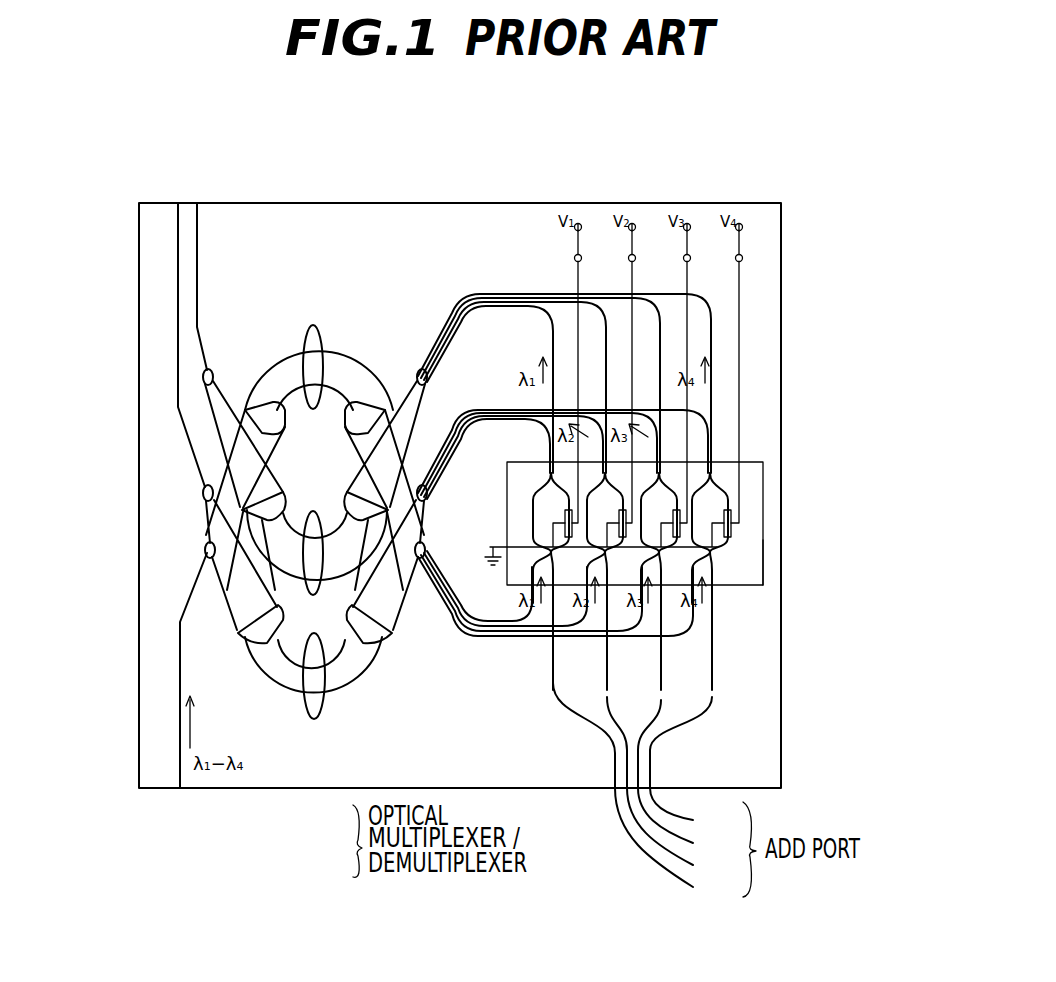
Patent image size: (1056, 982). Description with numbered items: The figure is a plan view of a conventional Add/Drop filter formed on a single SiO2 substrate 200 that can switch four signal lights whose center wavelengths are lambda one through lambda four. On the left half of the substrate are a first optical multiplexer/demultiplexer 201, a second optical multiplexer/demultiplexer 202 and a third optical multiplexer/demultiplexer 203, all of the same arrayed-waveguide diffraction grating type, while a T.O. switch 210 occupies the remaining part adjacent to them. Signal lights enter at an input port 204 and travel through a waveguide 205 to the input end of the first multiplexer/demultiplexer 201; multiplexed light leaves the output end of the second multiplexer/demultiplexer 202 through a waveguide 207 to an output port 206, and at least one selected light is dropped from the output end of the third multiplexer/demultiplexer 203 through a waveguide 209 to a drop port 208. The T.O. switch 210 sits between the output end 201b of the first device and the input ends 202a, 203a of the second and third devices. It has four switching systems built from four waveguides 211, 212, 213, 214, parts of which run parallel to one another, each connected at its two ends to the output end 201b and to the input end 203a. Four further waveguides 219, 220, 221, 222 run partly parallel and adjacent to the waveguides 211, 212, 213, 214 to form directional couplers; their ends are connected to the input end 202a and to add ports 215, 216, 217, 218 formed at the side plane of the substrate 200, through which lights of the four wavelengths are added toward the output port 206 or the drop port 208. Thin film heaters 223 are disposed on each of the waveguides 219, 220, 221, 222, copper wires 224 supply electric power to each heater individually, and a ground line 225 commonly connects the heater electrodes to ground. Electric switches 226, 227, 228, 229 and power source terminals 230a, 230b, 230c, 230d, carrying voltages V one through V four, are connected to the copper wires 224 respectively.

The SiO2 substrate 200 is at (781, 312).
The first optical multiplexer/demultiplexer 201 is at (317, 325).
The output end of the first multiplexer/demultiplexer 201b is at (423, 557).
The second optical multiplexer/demultiplexer 202 is at (313, 597).
The input end of the second multiplexer/demultiplexer 202a is at (433, 377).
The third optical multiplexer/demultiplexer 203 is at (313, 720).
The input end of the third multiplexer/demultiplexer 203a is at (428, 495).
The input port 204 is at (180, 788).
The waveguide 205 is at (180, 688).
The output port 206 is at (197, 203).
The waveguide 207 is at (197, 268).
The drop port 208 is at (177, 203).
The waveguide 209 is at (177, 275).
The T.O. switch 210 is at (768, 530).
The waveguide 211 is at (483, 625).
The waveguide 212 is at (497, 628).
The waveguide 213 is at (510, 633).
The waveguide 214 is at (525, 640).
The add port 215 is at (671, 845).
The add port 216 is at (677, 833).
The add port 217 is at (683, 821).
The add port 218 is at (689, 809).
The waveguide 219 is at (574, 718).
The waveguide 220 is at (605, 652).
The waveguide 221 is at (663, 650).
The waveguide 222 is at (704, 705).
The thin film heater 223 is at (729, 510).
The copper wires 224 is at (735, 358).
The ground line 225 is at (763, 585).
The electric switch 226 is at (574, 255).
The electric switch 227 is at (630, 254).
The electric switch 228 is at (685, 254).
The electric switch 229 is at (737, 254).
The power source terminal 230a is at (578, 223).
The power source terminal 230b is at (632, 223).
The power source terminal 230c is at (687, 223).
The power source terminal 230d is at (739, 223).